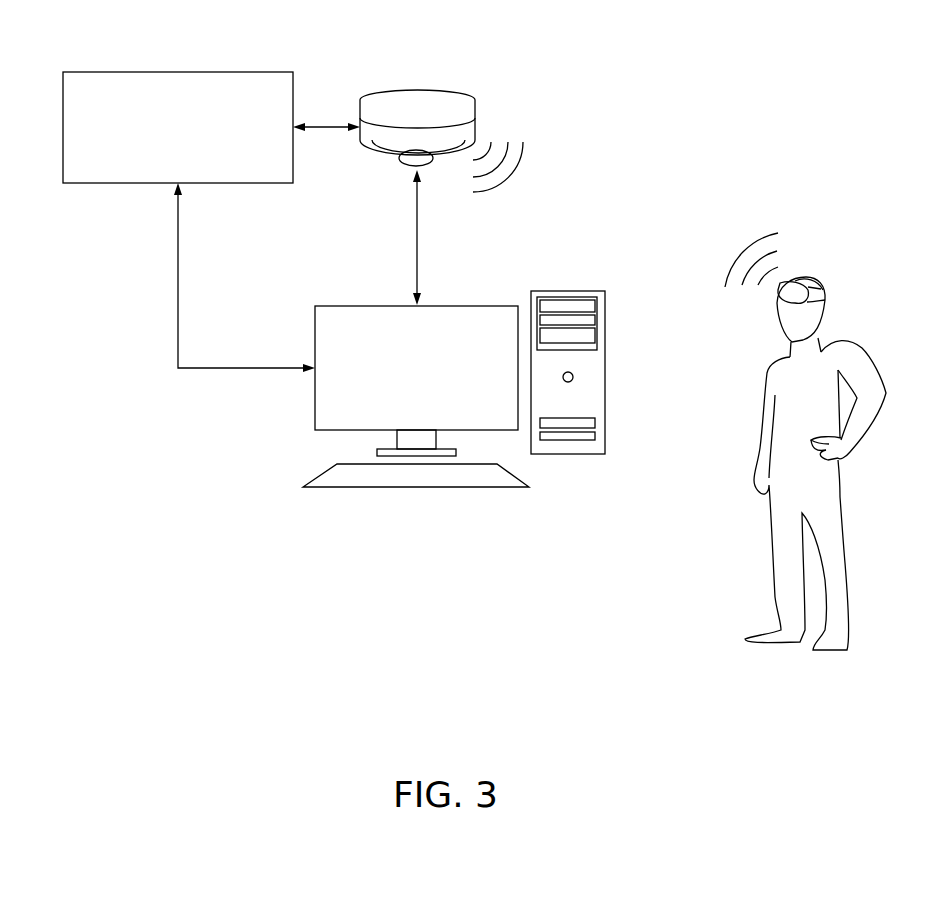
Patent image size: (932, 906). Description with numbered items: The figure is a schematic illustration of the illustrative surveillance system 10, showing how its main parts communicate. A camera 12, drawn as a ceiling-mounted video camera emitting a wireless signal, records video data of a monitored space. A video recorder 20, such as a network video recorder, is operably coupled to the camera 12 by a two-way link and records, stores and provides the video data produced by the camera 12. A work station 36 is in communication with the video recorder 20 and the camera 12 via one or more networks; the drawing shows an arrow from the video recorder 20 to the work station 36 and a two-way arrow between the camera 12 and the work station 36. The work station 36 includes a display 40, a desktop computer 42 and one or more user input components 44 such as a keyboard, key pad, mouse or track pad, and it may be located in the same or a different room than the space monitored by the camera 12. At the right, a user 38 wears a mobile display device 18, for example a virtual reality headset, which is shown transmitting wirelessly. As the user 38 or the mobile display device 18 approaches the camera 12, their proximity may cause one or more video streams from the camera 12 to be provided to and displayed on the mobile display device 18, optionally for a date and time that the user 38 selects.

The surveillance system 10 is at (606, 136).
The camera 12 is at (384, 164).
The mobile display device 18 is at (793, 292).
The video recorder 20 is at (177, 72).
The work station 36 is at (250, 462).
The user 38 is at (862, 360).
The display 40 is at (465, 306).
The desktop computer 42 is at (566, 291).
The user input component 44 is at (415, 487).